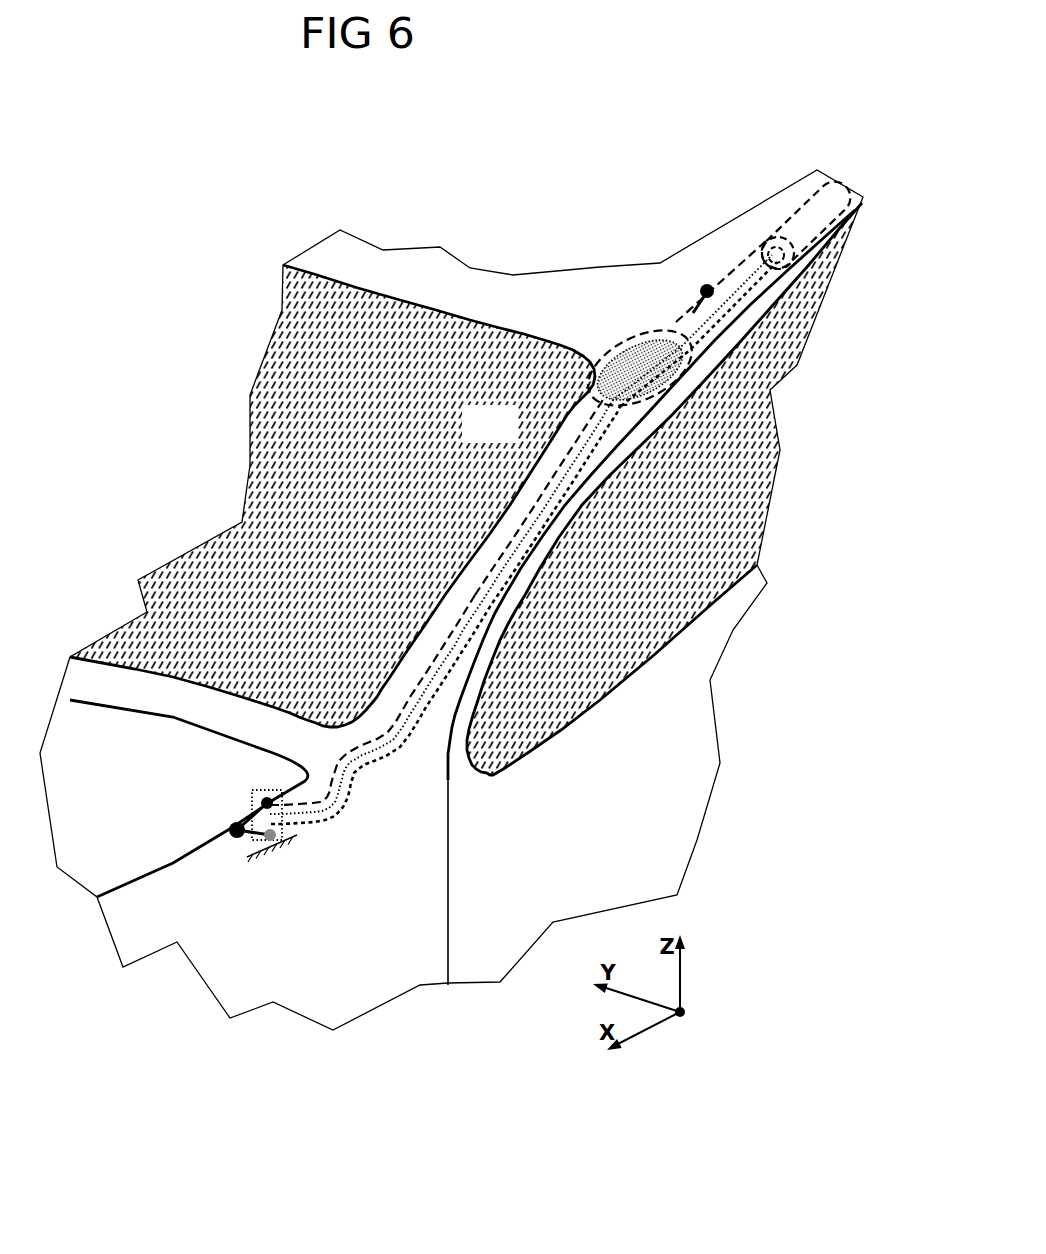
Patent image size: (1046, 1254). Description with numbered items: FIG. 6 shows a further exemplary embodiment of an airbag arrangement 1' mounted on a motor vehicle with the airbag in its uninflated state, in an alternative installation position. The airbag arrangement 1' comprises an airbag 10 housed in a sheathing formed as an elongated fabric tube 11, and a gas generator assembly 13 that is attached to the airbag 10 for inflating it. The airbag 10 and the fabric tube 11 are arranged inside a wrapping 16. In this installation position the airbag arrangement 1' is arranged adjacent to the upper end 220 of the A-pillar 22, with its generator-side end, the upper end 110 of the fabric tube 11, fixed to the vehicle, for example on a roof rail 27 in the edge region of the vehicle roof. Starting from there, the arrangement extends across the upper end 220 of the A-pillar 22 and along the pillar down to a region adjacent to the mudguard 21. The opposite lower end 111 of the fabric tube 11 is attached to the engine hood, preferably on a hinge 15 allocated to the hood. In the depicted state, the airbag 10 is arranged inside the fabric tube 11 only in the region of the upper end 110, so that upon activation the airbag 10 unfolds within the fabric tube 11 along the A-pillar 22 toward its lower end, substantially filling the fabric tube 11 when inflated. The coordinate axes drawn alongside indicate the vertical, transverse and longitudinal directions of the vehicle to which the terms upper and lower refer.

The airbag arrangement 1' is at (531, 422).
The airbag 10 is at (648, 362).
The fabric tube 11 is at (407, 718).
The gas generator assembly 13 is at (797, 197).
The hinge 15 is at (223, 838).
The wrapping 16 is at (385, 752).
The mudguard 21 is at (285, 975).
The A-pillar 22 is at (569, 497).
The roof rail 27 is at (757, 267).
The upper end of the fabric tube 110 is at (612, 358).
The lower end of the fabric tube 111 is at (365, 745).
The upper end of the A-pillar 220 is at (713, 358).